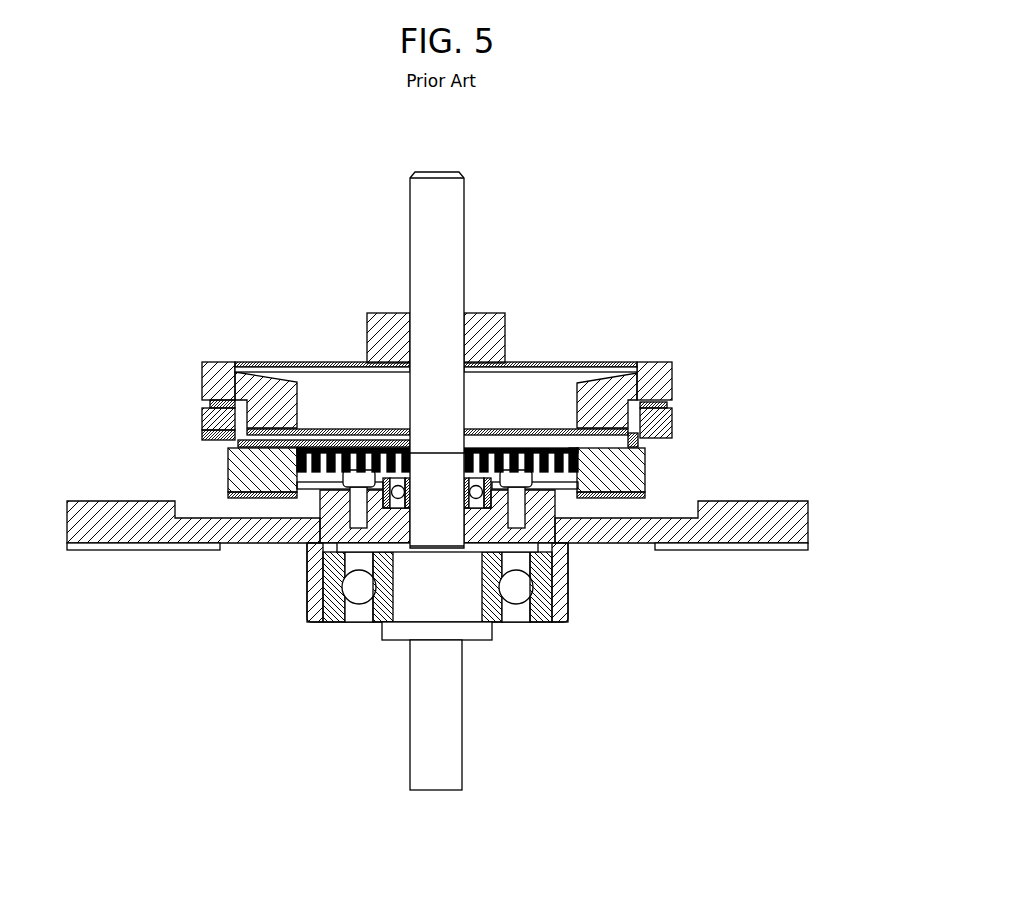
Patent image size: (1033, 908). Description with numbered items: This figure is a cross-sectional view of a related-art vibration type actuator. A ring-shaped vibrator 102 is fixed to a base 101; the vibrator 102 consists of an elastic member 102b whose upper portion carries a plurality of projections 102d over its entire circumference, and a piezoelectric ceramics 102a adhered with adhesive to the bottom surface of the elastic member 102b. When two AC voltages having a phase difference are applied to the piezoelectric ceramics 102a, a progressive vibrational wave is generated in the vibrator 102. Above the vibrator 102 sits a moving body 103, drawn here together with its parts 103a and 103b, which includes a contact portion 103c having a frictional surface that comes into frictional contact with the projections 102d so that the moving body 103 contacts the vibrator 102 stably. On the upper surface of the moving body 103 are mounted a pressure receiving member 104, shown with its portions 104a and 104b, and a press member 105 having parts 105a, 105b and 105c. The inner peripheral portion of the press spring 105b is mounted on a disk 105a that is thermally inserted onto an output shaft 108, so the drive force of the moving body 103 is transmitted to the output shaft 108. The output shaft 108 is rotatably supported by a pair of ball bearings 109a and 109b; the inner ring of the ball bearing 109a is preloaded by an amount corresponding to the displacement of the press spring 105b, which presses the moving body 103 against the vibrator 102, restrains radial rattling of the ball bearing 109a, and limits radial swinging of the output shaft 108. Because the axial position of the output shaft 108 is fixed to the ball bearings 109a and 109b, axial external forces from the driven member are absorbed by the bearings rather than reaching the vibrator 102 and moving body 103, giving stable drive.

The base 101 is at (763, 527).
The vibrator 102 is at (526, 465).
The piezoelectric ceramics 102a is at (637, 507).
The elastic member 102b is at (623, 472).
The projections 102d is at (643, 453).
The moving body 103 is at (230, 422).
The magnet 103a is at (203, 412).
The magnet back plate 103b is at (203, 432).
The contact portion 103c is at (240, 443).
The pressure receiving member 104 is at (735, 398).
The magnet 104a is at (663, 407).
The rotor outer ring 104b is at (660, 377).
The press member 105 is at (463, 318).
The disk 105a is at (474, 313).
The press spring 105b is at (634, 363).
The rotor rim 105c is at (638, 366).
The output shaft 108 is at (422, 220).
The ball bearing 109a is at (340, 603).
The ball bearing 109b is at (482, 512).